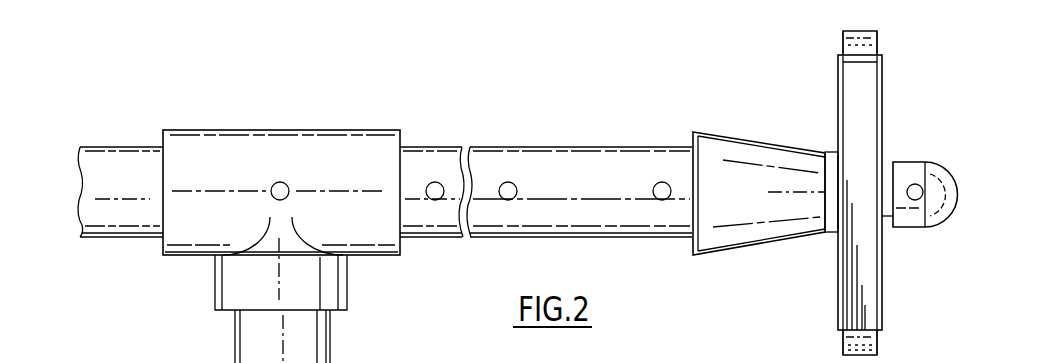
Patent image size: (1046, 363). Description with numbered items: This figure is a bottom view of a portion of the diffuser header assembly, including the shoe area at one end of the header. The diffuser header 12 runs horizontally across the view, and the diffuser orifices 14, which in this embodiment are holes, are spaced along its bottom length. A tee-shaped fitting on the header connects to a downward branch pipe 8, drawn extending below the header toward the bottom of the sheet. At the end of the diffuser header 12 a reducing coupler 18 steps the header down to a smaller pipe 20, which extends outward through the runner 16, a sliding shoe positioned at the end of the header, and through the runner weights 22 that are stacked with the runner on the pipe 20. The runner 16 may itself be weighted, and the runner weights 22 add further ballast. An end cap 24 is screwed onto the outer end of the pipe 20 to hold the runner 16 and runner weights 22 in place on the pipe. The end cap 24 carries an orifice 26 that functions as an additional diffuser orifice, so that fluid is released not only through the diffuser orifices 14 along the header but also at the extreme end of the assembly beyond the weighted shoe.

The pipe 8 is at (248, 347).
The diffuser header 12 is at (548, 160).
The diffuser orifices 14 is at (506, 186).
The runner 16 is at (862, 51).
The reducing coupler 18 is at (733, 204).
The pipe 20 is at (888, 220).
The runner weights 22 is at (838, 70).
The end cap 24 is at (907, 170).
The orifices 26 is at (918, 198).